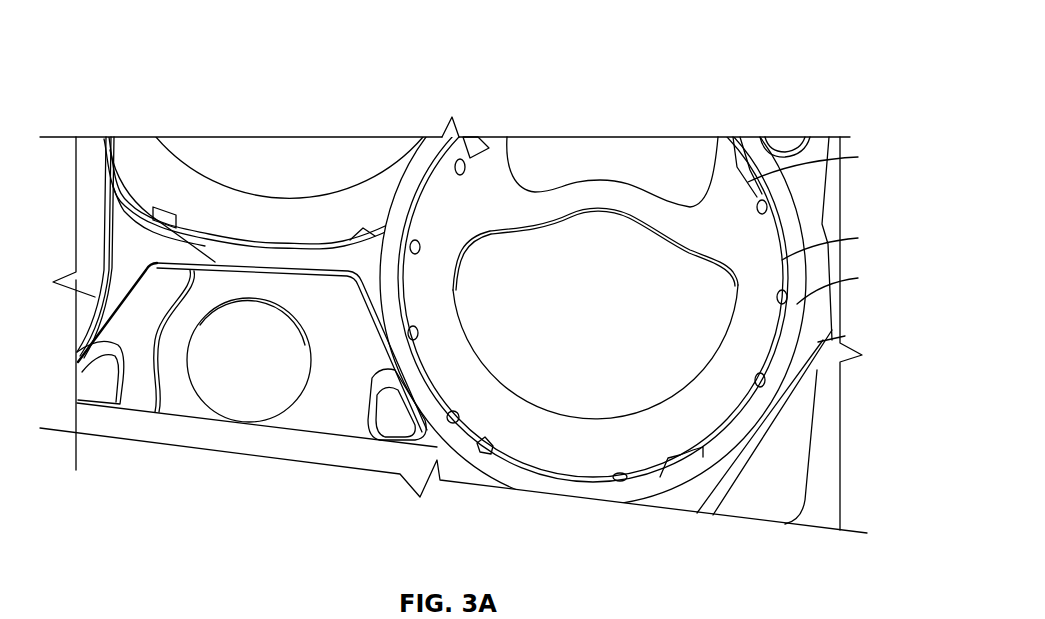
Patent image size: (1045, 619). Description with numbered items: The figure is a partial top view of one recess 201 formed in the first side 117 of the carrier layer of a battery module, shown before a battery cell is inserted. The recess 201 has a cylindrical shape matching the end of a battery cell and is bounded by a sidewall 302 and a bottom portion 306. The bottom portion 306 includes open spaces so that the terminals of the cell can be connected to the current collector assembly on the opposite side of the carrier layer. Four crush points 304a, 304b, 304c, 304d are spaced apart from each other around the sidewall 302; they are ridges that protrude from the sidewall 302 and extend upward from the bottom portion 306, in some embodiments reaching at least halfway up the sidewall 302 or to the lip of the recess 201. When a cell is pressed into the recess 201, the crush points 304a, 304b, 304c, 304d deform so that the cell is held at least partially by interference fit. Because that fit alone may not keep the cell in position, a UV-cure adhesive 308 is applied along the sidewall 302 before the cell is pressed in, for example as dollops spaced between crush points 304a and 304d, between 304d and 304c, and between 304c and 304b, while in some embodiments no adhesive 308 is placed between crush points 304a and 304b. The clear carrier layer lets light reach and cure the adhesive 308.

The recess 201 is at (757, 116).
The bottom portion 306 is at (573, 203).
The UV-cure adhesive 308 is at (768, 178).
The sidewall 302 is at (783, 258).
The first side 117 is at (797, 302).
The crush point 304a is at (465, 138).
The crush point 304b is at (805, 142).
The crush point 304c is at (673, 462).
The crush point 304d is at (483, 450).